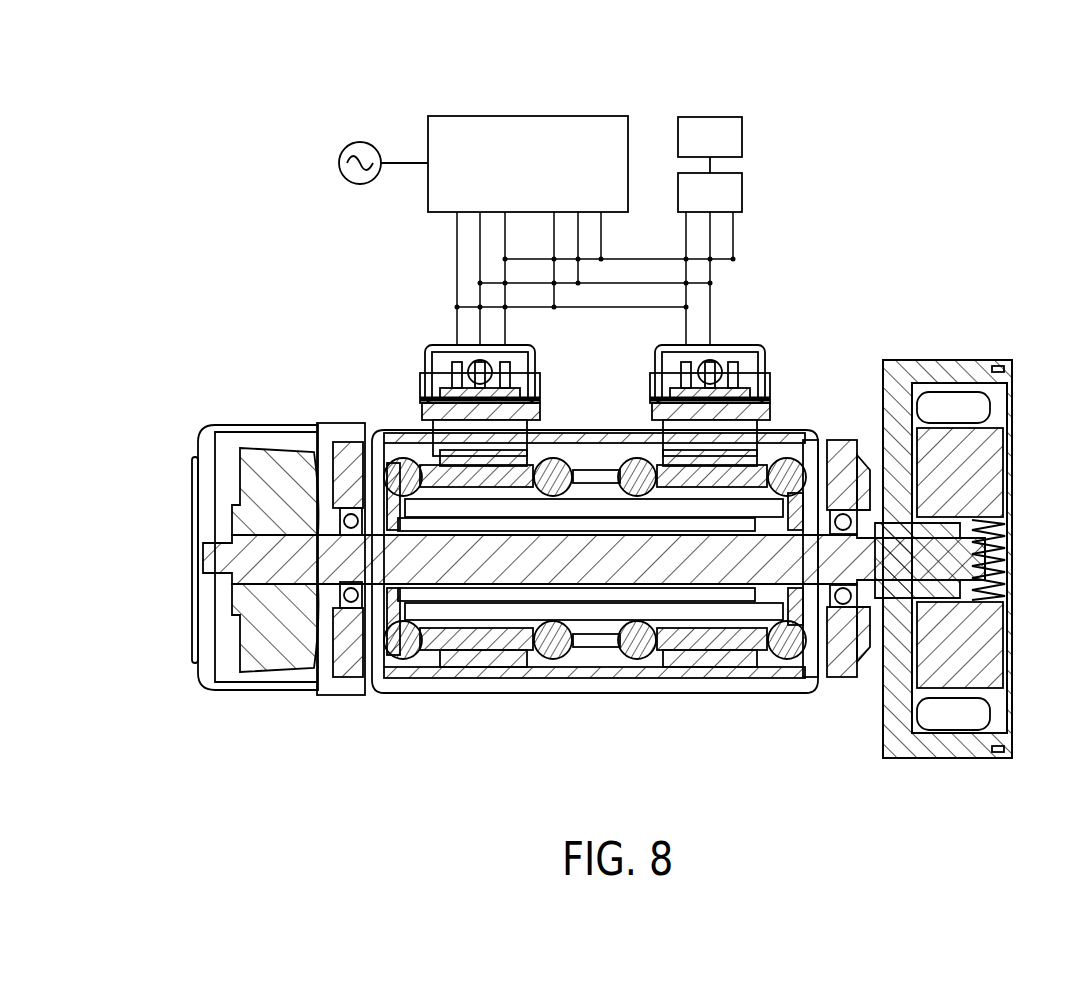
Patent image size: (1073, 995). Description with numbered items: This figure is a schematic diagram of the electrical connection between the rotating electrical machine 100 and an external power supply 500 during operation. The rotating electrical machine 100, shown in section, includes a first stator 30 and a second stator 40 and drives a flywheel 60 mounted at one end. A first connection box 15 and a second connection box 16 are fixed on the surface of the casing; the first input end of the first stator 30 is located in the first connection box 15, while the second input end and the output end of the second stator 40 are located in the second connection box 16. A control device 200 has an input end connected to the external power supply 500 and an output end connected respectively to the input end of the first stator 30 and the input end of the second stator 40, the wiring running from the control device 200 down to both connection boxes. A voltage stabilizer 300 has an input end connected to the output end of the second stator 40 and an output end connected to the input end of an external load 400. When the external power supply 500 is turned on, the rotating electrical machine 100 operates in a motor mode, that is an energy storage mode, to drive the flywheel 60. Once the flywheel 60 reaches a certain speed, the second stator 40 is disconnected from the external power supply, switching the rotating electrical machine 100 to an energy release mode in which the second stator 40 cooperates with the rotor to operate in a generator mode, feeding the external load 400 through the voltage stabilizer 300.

The rotating electrical machine 100 is at (268, 425).
The first connection box 15 is at (442, 340).
The second connection box 16 is at (767, 340).
The first stator 30 is at (423, 440).
The second stator 40 is at (733, 477).
The flywheel 60 is at (960, 762).
The control device 200 is at (550, 117).
The voltage stabilizer 300 is at (748, 193).
The external load 400 is at (713, 130).
The external power supply 500 is at (352, 138).